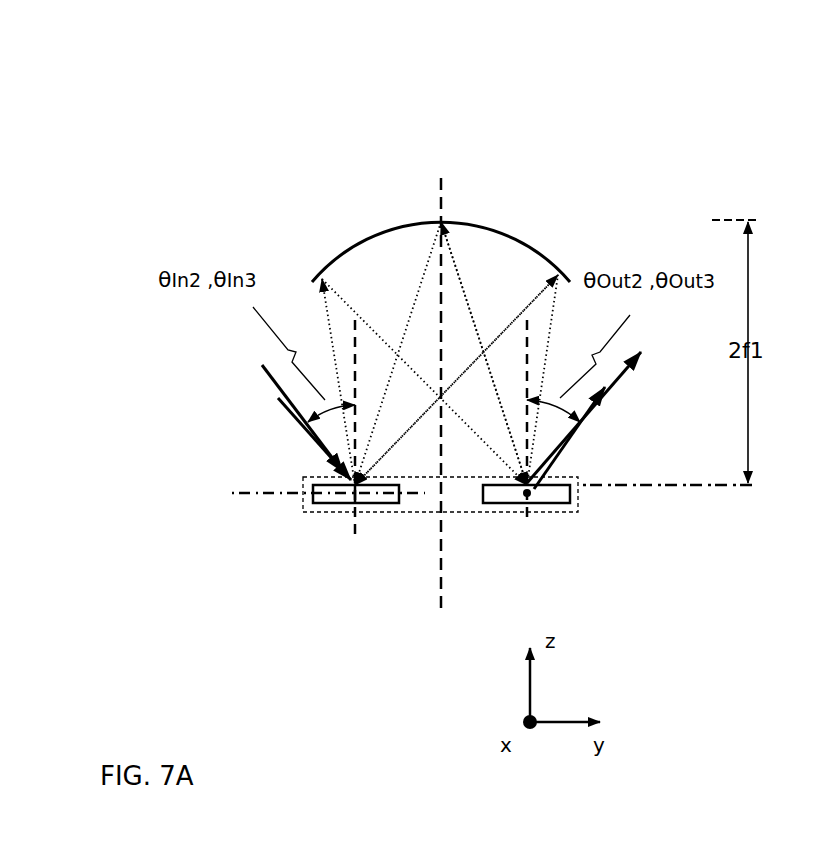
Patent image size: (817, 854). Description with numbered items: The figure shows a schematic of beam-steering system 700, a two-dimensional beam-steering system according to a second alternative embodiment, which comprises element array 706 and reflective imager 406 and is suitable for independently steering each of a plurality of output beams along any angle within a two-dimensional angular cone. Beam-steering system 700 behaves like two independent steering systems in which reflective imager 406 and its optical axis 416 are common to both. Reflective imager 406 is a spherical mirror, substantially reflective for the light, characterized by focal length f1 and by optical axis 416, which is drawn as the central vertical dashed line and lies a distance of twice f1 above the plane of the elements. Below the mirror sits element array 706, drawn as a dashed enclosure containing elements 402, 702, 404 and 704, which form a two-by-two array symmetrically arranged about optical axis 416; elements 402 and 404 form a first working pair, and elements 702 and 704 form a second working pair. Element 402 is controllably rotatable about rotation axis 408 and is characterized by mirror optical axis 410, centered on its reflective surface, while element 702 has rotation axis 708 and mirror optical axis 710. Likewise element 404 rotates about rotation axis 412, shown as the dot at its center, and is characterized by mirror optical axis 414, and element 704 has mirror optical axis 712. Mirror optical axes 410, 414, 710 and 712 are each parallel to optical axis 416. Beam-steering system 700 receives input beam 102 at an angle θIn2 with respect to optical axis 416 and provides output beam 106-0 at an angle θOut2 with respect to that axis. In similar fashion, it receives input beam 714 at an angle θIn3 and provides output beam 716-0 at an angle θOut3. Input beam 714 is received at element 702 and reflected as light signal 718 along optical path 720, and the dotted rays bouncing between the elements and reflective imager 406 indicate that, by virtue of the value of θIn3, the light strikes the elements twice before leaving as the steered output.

The beam-steering system 700 is at (120, 122).
The light signal 718 is at (406, 319).
The optical path 720 is at (406, 319).
The optical axis 416 is at (495, 373).
The reflective imager 406 is at (446, 234).
The input beam 102 is at (254, 418).
The input beam 714 is at (268, 439).
The rotation axis 408 is at (268, 473).
The rotation axis 708 is at (268, 473).
The element 402 is at (281, 526).
The element 702 is at (281, 526).
The mirror optical axis 410 is at (260, 556).
The mirror optical axis 710 is at (260, 556).
The element array 706 is at (440, 562).
The element 404 is at (605, 518).
The element 704 is at (605, 518).
The rotation axis 412 is at (599, 544).
The mirror optical axis 414 is at (627, 485).
The mirror optical axis 712 is at (627, 485).
The output beam 106-0 is at (620, 417).
The output beam 716-0 is at (603, 438).